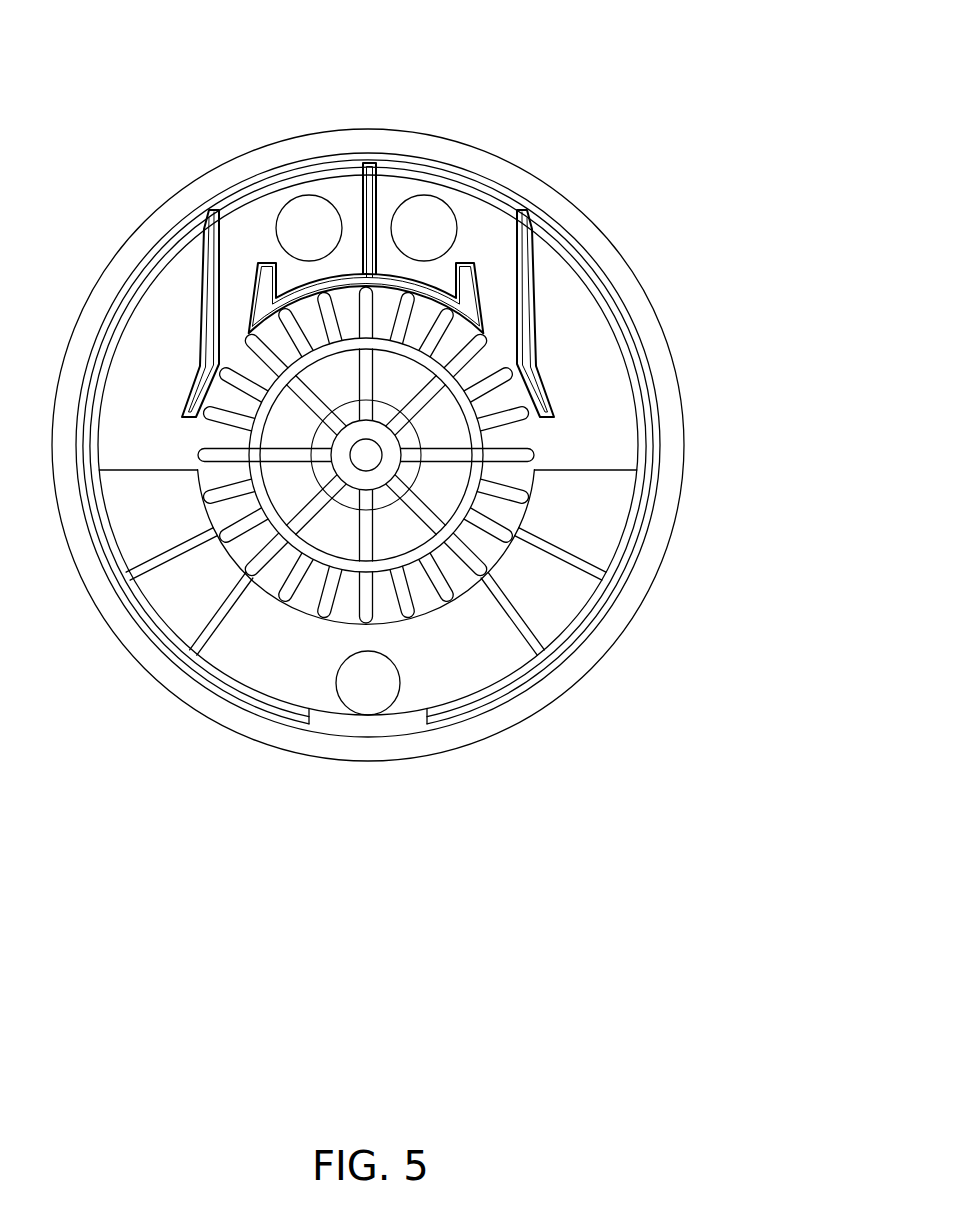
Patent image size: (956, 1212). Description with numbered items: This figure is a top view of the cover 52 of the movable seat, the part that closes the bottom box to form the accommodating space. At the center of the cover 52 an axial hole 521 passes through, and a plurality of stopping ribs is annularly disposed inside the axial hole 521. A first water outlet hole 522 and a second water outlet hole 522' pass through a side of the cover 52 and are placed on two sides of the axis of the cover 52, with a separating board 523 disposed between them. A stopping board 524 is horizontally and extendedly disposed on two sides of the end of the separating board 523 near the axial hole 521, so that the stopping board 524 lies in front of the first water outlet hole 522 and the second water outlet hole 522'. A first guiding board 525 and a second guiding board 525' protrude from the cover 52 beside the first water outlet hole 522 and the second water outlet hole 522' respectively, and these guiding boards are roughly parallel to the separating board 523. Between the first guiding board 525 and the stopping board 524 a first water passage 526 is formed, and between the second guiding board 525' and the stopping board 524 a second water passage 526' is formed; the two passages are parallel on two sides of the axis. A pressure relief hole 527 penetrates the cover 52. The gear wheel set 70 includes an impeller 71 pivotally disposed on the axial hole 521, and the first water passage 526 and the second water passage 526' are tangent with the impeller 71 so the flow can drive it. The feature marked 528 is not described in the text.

The cover 52 is at (620, 272).
The gear wheel set 70 is at (506, 455).
The impeller 71 is at (485, 569).
The axial hole 521 is at (373, 455).
The first water outlet hole 522 is at (474, 139).
The second water outlet hole 522' is at (328, 130).
The separating board 523 is at (373, 210).
The stopping board 524 is at (280, 290).
The first guiding board 525 is at (610, 243).
The second guiding board 525' is at (129, 241).
The first water passage 526 is at (573, 194).
The second water passage 526' is at (177, 189).
The pressure relief hole 527 is at (372, 693).
The bottom notch 528 is at (426, 793).